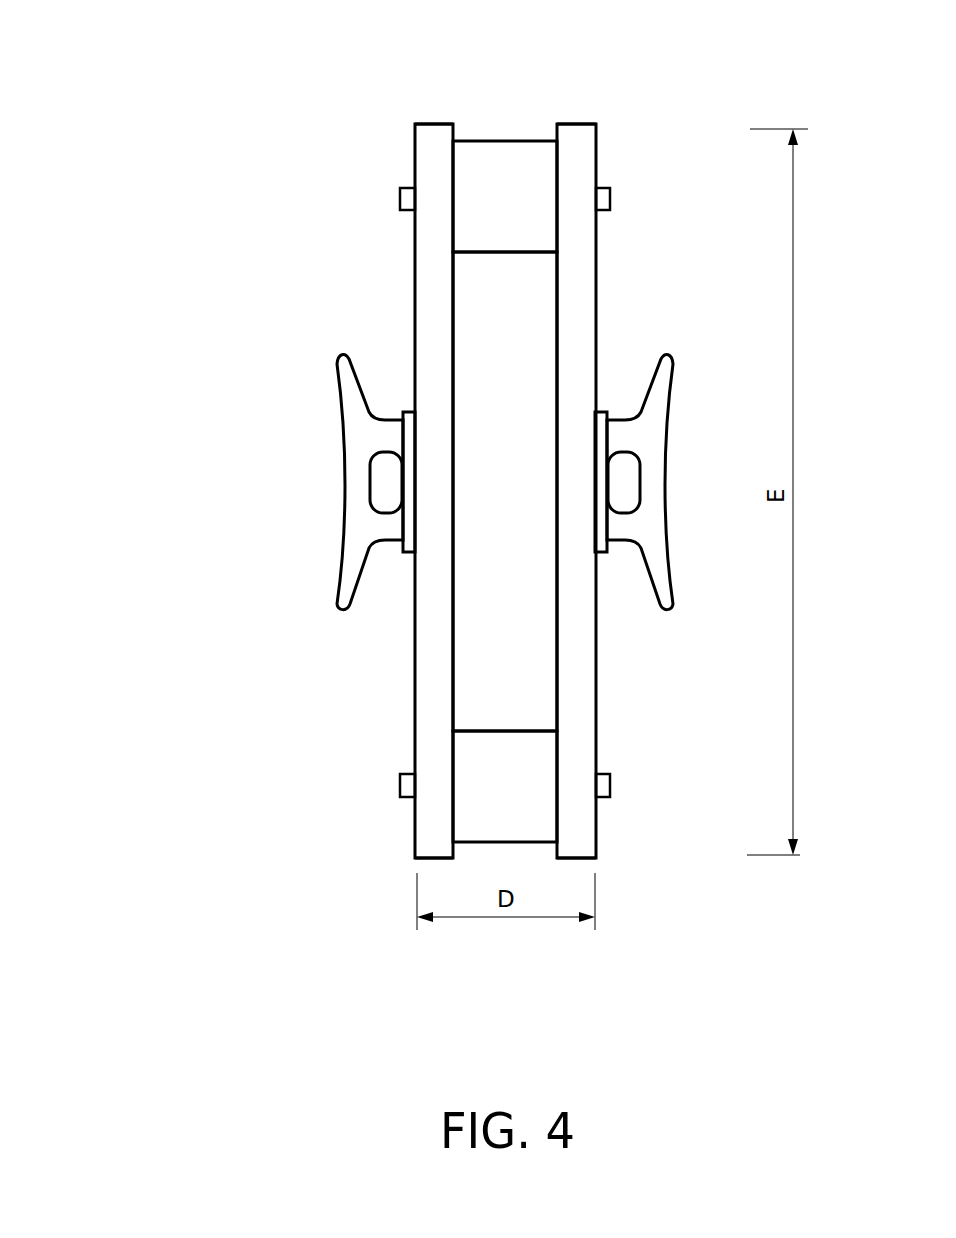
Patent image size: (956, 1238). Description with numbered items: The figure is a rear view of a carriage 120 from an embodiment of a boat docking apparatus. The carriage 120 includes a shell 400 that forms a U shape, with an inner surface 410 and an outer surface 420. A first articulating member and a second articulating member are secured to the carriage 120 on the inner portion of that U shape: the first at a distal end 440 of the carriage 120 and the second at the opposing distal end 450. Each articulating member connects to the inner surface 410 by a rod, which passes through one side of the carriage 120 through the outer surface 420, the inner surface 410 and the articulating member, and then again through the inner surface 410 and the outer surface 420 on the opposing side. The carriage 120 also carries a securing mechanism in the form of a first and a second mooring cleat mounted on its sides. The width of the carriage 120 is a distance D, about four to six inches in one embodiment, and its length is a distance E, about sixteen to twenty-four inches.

The carriage 120 is at (260, 279).
The shell 400 is at (495, 491).
The inner surface 410 is at (485, 345).
The outer surface 420 is at (417, 645).
The distal end 440 is at (585, 116).
The opposing distal end 450 is at (425, 871).